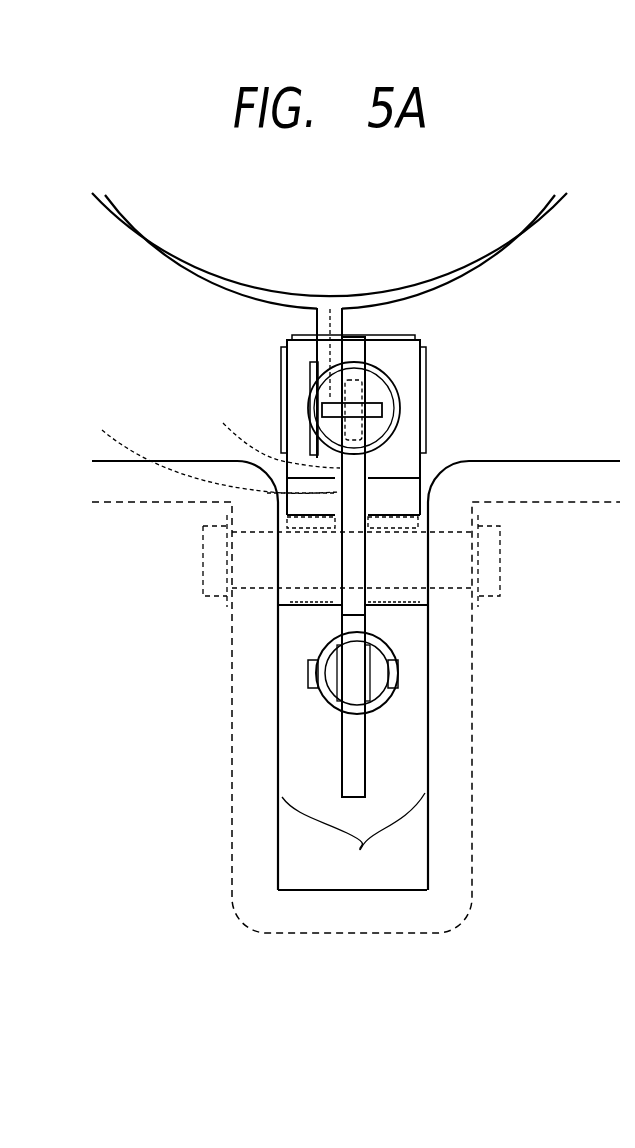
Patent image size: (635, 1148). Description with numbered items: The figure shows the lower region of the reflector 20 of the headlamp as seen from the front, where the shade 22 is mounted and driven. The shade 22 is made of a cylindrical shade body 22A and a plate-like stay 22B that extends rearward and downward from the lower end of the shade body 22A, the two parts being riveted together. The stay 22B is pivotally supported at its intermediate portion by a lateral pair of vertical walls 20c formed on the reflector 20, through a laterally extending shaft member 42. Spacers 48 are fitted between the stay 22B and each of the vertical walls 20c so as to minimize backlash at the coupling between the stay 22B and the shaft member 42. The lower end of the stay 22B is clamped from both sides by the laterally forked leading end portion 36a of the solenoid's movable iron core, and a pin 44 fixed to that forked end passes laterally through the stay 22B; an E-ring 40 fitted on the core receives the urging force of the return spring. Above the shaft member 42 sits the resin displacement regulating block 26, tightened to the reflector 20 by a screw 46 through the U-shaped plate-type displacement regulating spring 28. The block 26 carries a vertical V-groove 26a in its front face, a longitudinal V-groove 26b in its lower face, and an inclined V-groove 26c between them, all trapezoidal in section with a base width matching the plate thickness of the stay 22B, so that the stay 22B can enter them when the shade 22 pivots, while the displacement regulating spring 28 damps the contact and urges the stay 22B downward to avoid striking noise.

The reflector 20 is at (184, 455).
The vertical walls 20c is at (353, 838).
The shade 22 is at (200, 292).
The shade body 22A is at (259, 289).
The stay 22B is at (347, 765).
The displacement regulating block 26 is at (445, 325).
The V-groove 26a is at (271, 415).
The V-groove 26b is at (383, 412).
The V-groove 26c is at (198, 450).
The displacement regulating spring 28 is at (438, 398).
The leading end portion of the movable iron core 36a is at (338, 694).
The E-ring 40 is at (332, 710).
The shaft member 42 is at (455, 564).
The pin 44 is at (316, 662).
The screw 46 is at (385, 393).
The spacers 48 is at (310, 597).